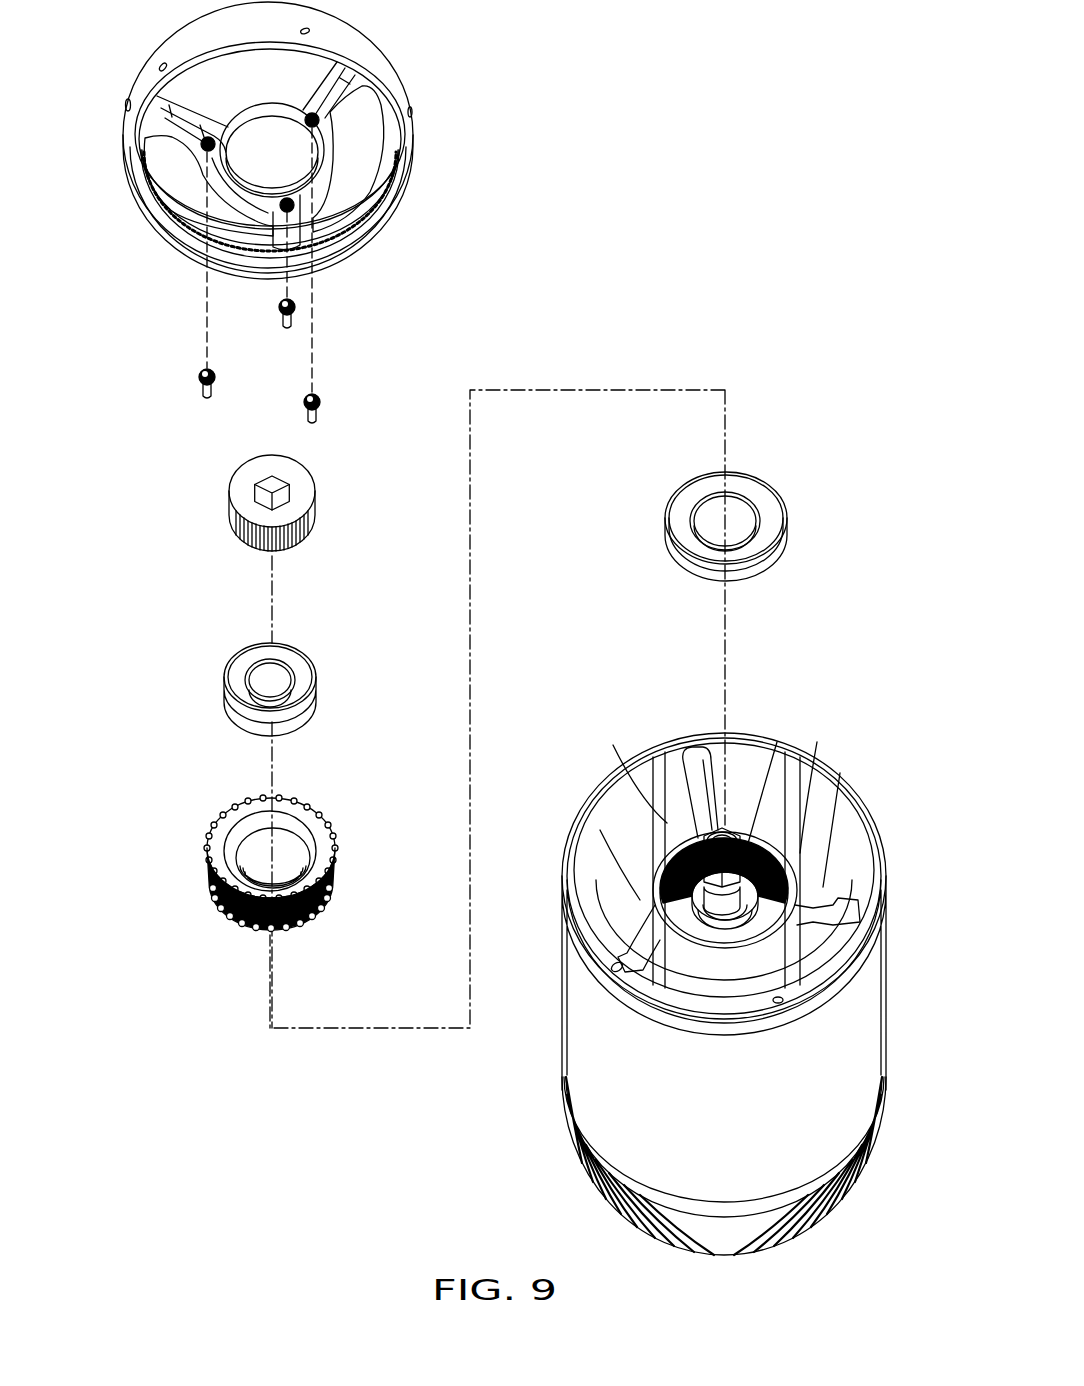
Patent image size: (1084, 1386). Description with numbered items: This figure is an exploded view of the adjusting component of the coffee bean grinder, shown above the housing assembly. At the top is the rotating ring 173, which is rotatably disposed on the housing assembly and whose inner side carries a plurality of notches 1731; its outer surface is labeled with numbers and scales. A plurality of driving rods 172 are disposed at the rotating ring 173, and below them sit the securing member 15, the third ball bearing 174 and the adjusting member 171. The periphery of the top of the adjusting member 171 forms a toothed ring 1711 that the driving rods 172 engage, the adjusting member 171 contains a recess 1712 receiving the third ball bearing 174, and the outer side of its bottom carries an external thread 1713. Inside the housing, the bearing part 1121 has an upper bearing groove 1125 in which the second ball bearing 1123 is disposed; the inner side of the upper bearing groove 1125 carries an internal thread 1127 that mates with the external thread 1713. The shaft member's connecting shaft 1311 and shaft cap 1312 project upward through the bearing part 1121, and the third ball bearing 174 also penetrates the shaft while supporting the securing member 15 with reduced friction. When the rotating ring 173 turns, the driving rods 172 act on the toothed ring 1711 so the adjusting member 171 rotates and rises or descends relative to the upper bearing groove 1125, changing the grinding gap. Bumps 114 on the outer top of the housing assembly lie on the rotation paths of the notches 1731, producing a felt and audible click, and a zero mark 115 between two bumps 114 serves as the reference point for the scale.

The rotating ring 173 is at (180, 240).
The notches 1731 is at (376, 232).
The driving rods 172 is at (312, 421).
The securing member 15 is at (200, 502).
The third ball bearing 174 is at (232, 690).
The adjusting member 171 is at (247, 840).
The toothed ring 1711 is at (216, 858).
The recess 1712 is at (310, 840).
The external thread 1713 is at (236, 913).
The second ball bearing 1123 is at (745, 490).
The shaft cap 1312 is at (730, 865).
The connecting shaft 1311 is at (733, 900).
The internal thread 1127 is at (683, 917).
The upper bearing groove 1125 is at (668, 887).
The bearing part 1121 is at (800, 912).
The bumps 114 is at (617, 970).
The zero mark 115 is at (778, 1003).